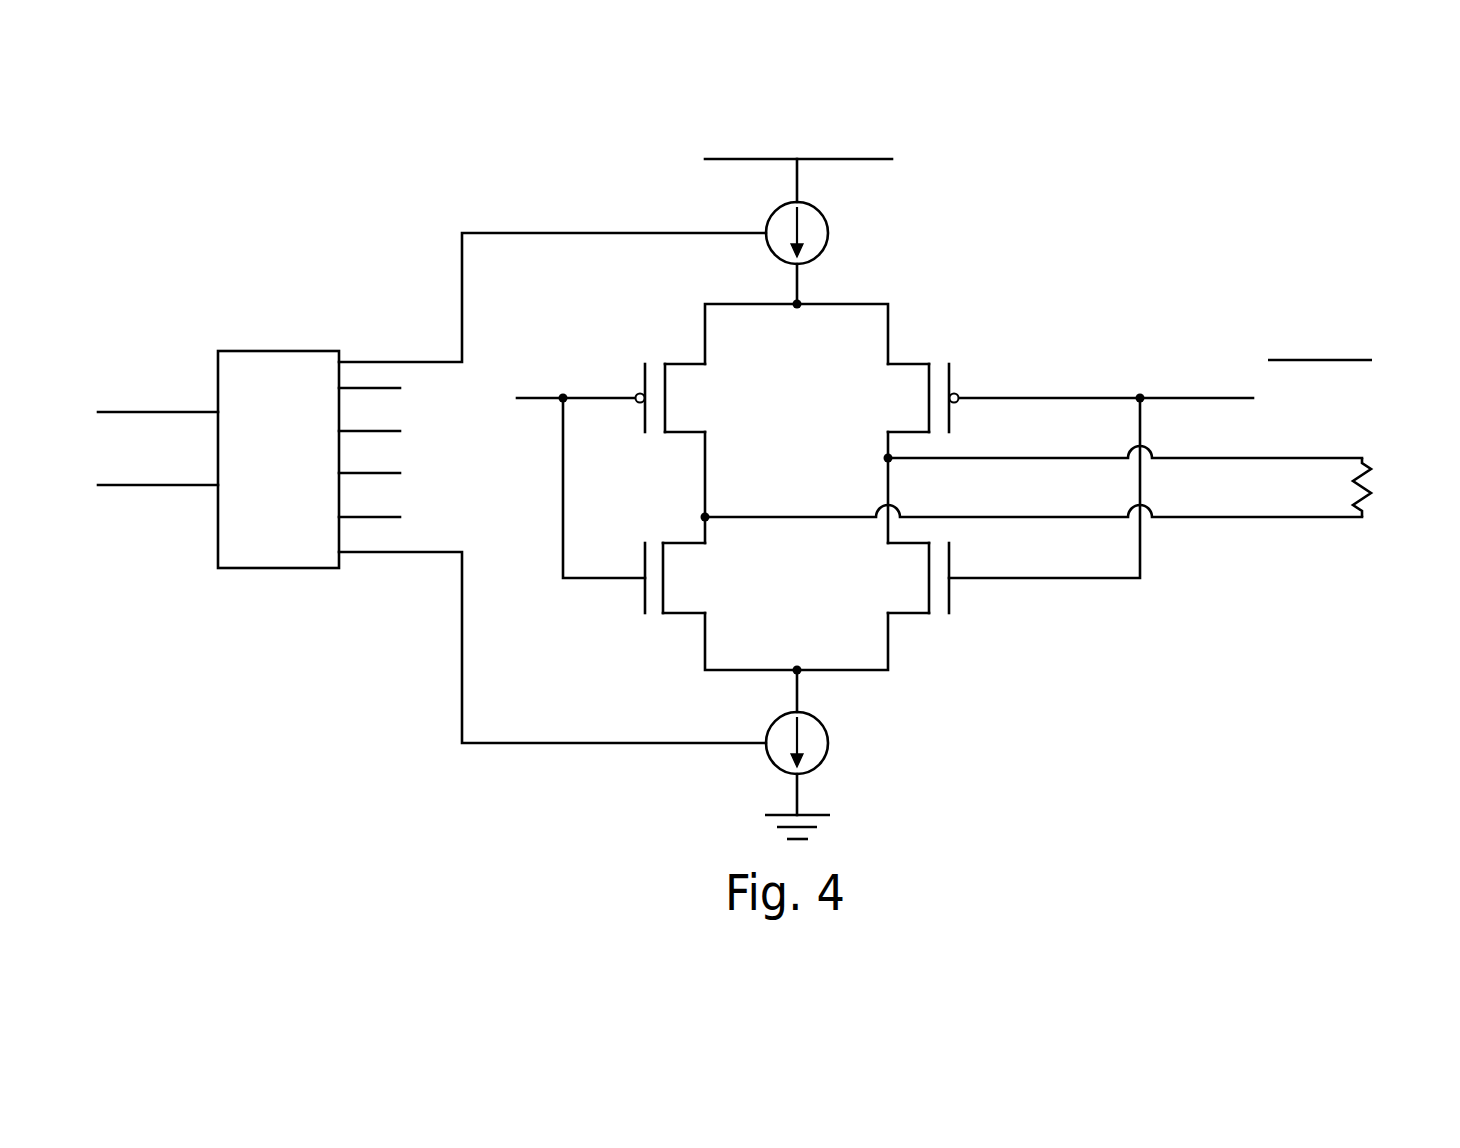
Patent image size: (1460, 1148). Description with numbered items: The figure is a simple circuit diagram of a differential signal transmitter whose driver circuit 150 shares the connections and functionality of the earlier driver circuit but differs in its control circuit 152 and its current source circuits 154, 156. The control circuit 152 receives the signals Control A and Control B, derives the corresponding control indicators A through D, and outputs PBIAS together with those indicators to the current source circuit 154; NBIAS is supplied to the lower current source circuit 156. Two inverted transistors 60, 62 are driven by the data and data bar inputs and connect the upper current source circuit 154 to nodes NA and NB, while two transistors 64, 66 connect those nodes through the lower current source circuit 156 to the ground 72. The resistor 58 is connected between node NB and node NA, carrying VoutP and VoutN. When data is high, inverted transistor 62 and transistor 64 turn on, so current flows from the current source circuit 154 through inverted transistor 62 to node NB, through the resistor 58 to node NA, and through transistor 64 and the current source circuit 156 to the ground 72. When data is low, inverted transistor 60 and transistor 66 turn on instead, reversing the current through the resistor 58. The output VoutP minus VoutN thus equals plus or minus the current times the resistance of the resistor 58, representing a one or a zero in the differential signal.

The driver circuit 150 is at (1310, 208).
The control circuit 152 is at (274, 318).
The current source circuit 154 is at (849, 240).
The current source circuit 156 is at (856, 743).
The inverted transistor 60 is at (628, 376).
The inverted transistor 62 is at (968, 387).
The transistor 64 is at (622, 590).
The transistor 66 is at (964, 599).
The resistor 58 is at (1376, 514).
The ground 72 is at (748, 838).